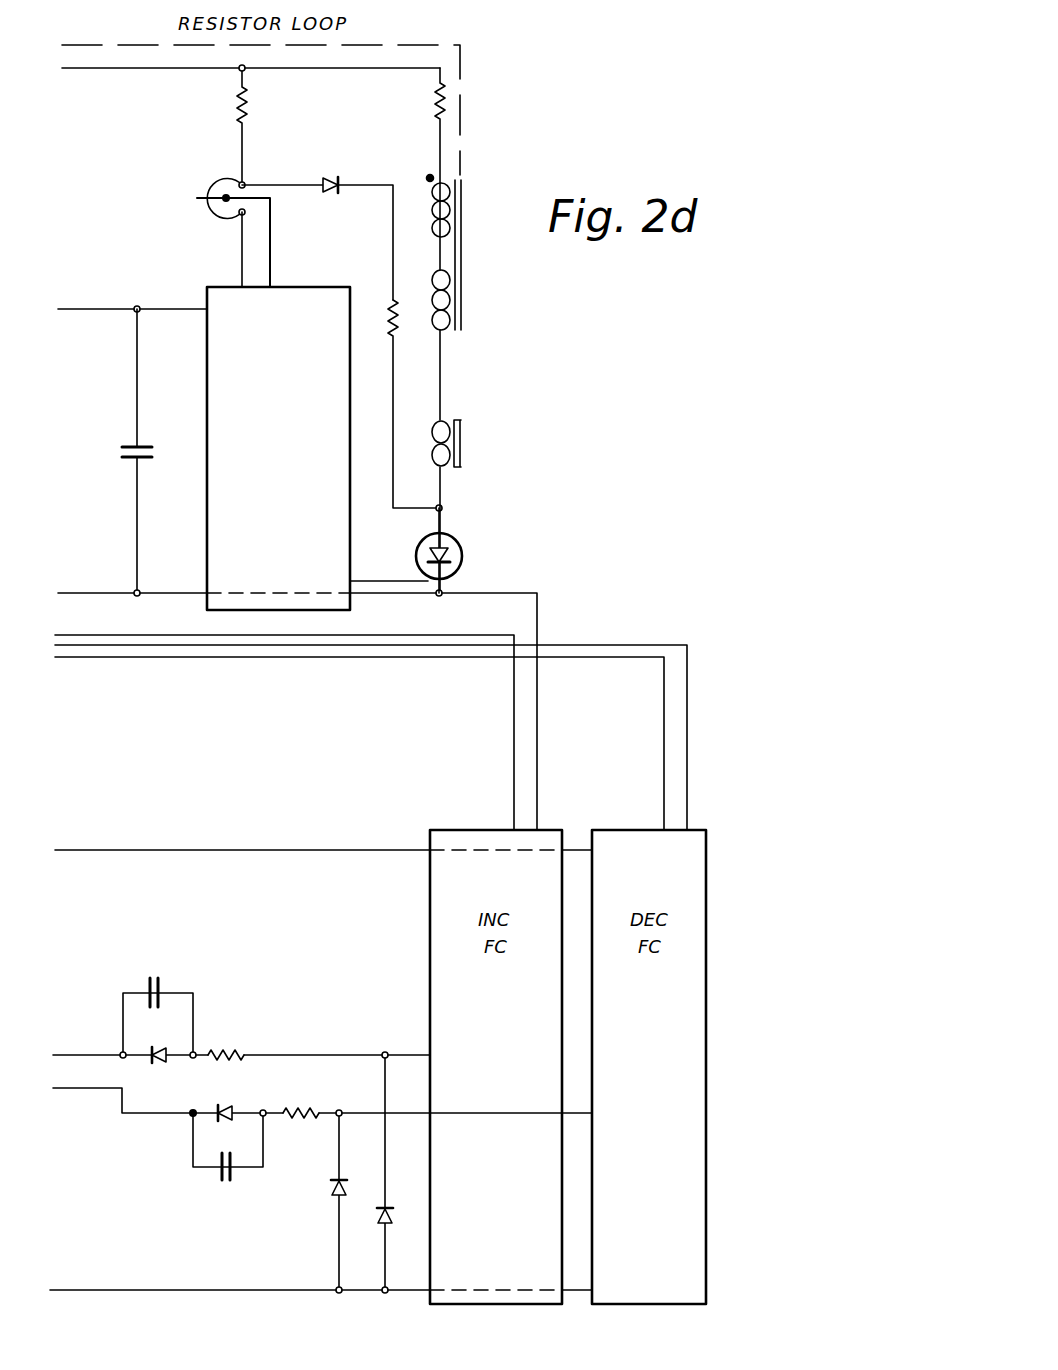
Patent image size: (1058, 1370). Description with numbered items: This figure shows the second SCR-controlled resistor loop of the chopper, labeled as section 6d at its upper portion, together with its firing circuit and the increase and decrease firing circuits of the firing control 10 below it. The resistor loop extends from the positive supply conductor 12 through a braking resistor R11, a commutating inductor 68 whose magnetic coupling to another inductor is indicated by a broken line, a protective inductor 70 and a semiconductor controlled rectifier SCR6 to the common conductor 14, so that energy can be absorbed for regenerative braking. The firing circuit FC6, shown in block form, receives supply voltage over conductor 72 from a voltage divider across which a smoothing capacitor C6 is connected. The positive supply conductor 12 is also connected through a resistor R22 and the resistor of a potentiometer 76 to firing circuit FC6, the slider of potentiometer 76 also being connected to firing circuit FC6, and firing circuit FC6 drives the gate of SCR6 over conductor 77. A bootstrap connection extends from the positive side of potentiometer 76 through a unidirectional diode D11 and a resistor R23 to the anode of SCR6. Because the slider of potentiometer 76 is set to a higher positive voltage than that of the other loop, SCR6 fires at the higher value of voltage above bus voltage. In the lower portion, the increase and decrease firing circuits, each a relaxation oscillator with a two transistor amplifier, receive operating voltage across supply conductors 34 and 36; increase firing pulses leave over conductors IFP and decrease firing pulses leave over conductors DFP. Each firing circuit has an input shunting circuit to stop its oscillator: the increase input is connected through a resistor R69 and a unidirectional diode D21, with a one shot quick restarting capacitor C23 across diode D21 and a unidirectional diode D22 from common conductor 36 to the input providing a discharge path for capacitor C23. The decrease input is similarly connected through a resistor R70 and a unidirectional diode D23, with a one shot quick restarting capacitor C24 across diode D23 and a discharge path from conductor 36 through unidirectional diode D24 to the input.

The positive supply conductor 12 is at (172, 69).
The resistor R22 is at (250, 102).
The braking resistor R11 is at (435, 103).
The circuit section 6d is at (156, 161).
The potentiometer 76 is at (207, 212).
The unidirectional diode D11 is at (337, 158).
The resistor R23 is at (381, 312).
The commutating inductor 68 is at (467, 252).
The protective inductor 70 is at (466, 435).
The conductor 72 is at (155, 308).
The firing circuit FC6 is at (278, 448).
The smoothing capacitor C6 is at (123, 452).
The common conductor 14 is at (175, 592).
The conductor 77 is at (383, 578).
The semiconductor controlled rectifier SCR6 is at (461, 569).
The firing control 10 is at (384, 819).
The conductors IFP is at (509, 712).
The conductors DFP is at (622, 657).
The supply conductor 34 is at (193, 853).
The unidirectional diode D21 is at (168, 1062).
The one shot quick restarting capacitor C23 is at (158, 975).
The resistor R69 is at (229, 1054).
The unidirectional diode D23 is at (233, 1104).
The one shot quick restarting capacitor C24 is at (223, 1180).
The resistor R70 is at (302, 1108).
The unidirectional diode D24 is at (332, 1187).
The unidirectional diode D22 is at (382, 1214).
The common conductor 36 is at (176, 1288).